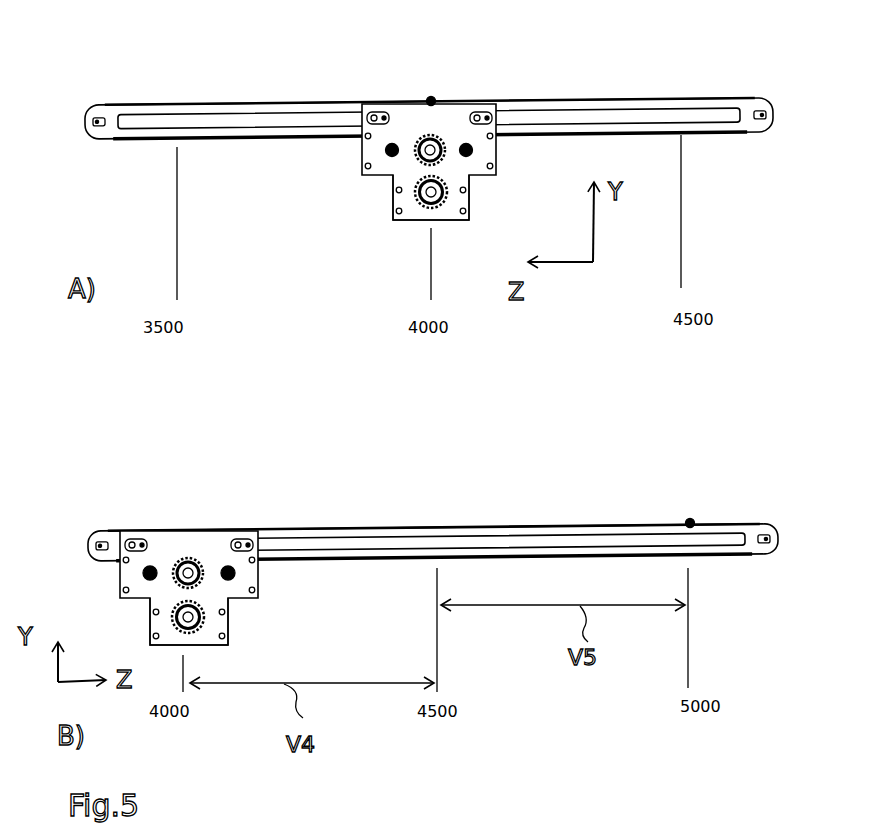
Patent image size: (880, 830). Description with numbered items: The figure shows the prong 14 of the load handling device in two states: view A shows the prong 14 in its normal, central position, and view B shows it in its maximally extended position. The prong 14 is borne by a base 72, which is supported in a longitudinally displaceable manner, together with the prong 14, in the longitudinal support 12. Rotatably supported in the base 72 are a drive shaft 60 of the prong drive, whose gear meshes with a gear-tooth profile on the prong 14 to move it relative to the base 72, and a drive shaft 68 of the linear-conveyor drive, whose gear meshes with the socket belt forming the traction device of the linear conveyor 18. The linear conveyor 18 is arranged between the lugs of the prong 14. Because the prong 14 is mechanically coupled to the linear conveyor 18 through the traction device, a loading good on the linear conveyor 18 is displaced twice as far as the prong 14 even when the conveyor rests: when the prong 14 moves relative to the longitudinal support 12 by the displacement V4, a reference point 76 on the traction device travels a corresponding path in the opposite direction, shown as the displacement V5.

In FIG. 5A, the longitudinal support 12 is at (374, 196).
In FIG. 5B, the longitudinal support 12 is at (130, 610).
In FIG. 5A, the prong 14 is at (744, 134).
In FIG. 5B, the prong 14 is at (751, 558).
In FIG. 5A, the linear conveyor 18 is at (655, 98).
In FIG. 5B, the linear conveyor 18 is at (614, 522).
In FIG. 5A, the drive shaft 60 is at (442, 138).
In FIG. 5B, the drive shaft 60 is at (188, 573).
In FIG. 5A, the drive shaft 68 is at (428, 206).
In FIG. 5B, the drive shaft 68 is at (188, 617).
In FIG. 5A, the base 72 is at (476, 196).
In FIG. 5B, the base 72 is at (260, 624).
In FIG. 5A, the reference point 76 is at (433, 99).
In FIG. 5B, the reference point 76 is at (693, 521).